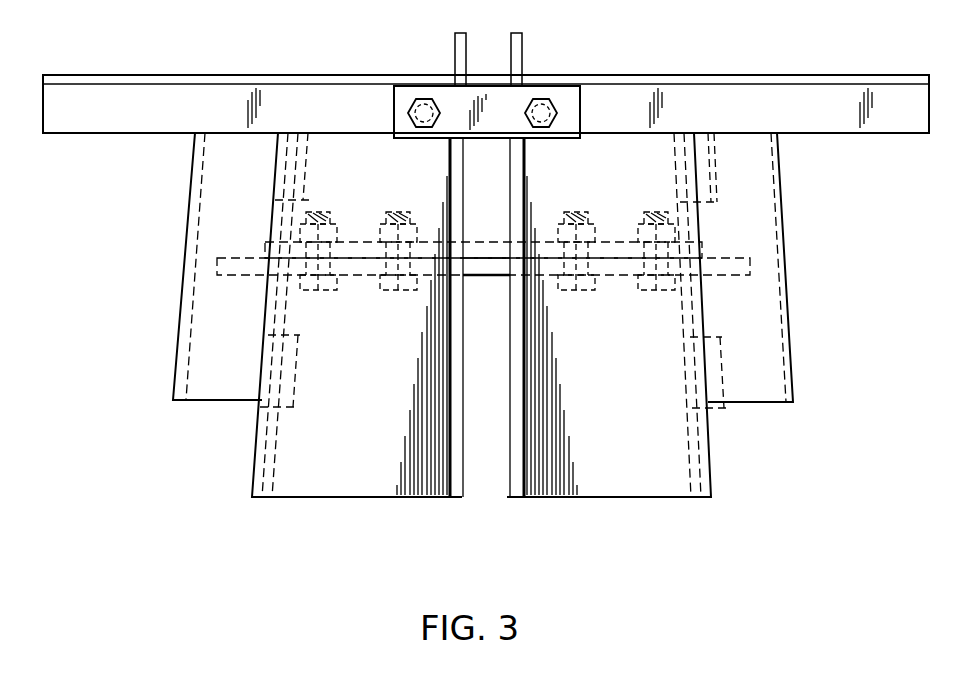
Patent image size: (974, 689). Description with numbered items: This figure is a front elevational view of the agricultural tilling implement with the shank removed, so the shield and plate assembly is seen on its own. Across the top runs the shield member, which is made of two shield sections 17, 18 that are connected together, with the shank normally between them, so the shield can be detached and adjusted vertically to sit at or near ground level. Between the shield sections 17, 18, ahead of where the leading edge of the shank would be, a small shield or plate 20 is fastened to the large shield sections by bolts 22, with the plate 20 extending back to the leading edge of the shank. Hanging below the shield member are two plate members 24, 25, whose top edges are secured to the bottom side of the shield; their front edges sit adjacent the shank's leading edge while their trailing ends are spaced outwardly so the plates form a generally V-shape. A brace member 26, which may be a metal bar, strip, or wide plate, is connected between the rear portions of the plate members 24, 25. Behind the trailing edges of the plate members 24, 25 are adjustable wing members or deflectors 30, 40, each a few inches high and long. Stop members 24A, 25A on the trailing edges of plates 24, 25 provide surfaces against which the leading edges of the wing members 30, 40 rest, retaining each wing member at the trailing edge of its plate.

The shield section 17 is at (190, 75).
The shield section 18 is at (886, 75).
The plate 20 is at (473, 92).
The bolts 22 is at (412, 103).
The plate member 24 is at (583, 473).
The stop member 24A is at (716, 148).
The plate member 25 is at (378, 481).
The stop member 25A is at (325, 135).
The brace member 26 is at (485, 278).
The wing member 30 is at (750, 380).
The wing member 40 is at (222, 372).